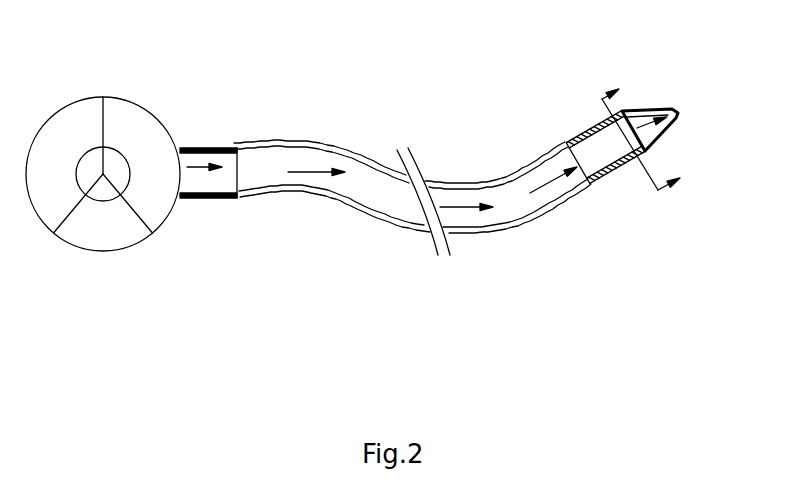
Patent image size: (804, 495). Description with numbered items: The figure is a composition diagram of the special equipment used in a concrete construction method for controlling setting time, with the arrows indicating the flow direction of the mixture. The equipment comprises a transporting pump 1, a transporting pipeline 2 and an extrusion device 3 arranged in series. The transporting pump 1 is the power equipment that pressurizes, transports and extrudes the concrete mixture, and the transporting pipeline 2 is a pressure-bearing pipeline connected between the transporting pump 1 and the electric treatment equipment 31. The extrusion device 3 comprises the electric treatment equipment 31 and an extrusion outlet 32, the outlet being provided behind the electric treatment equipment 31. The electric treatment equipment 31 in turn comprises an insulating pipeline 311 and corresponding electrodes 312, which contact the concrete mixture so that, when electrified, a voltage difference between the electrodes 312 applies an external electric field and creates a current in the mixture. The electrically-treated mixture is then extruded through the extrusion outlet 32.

The transporting pump 1 is at (143, 140).
The transporting pipeline 2 is at (335, 143).
The extrusion device 3 is at (647, 158).
The electric treatment equipment 31 is at (572, 175).
The insulating pipeline 311 is at (592, 184).
The electrodes 312 is at (640, 162).
The extrusion outlet 32 is at (677, 113).